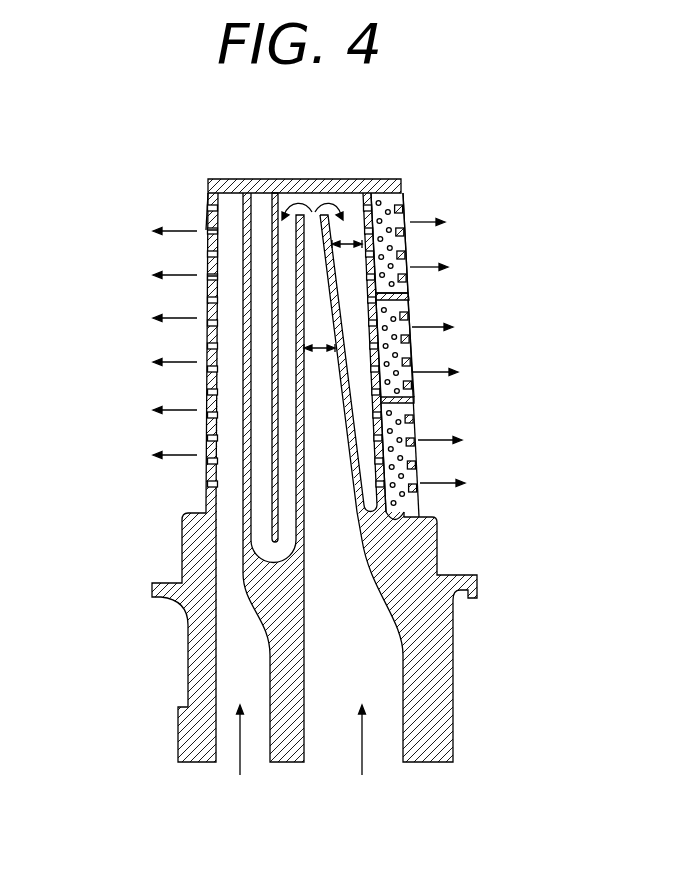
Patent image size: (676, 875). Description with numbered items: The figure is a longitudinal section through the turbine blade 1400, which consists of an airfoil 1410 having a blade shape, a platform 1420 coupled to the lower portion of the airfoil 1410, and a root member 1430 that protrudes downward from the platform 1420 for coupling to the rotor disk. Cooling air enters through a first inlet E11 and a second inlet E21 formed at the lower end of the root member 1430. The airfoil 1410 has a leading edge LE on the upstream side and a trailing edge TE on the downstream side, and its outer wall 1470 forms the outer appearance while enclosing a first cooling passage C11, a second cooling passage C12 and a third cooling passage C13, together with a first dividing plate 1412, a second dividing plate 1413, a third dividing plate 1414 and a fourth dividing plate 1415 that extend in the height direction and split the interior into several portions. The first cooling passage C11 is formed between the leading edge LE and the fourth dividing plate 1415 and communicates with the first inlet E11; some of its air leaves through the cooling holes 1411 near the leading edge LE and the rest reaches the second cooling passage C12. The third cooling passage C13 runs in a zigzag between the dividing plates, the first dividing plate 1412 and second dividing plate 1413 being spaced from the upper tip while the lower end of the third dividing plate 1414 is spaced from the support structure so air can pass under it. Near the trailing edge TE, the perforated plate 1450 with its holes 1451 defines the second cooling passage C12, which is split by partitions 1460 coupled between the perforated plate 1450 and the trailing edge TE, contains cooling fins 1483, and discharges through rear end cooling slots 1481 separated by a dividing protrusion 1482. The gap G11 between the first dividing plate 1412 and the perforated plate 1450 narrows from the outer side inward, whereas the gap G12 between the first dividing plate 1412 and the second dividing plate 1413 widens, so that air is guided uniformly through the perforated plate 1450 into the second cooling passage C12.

The turbine blade 1400 is at (385, 131).
The airfoil 1410 is at (232, 188).
The cooling holes 1411 is at (210, 395).
The first dividing plate 1412 is at (360, 495).
The second dividing plate 1413 is at (297, 465).
The third dividing plate 1414 is at (272, 488).
The fourth dividing plate 1415 is at (243, 430).
The platform 1420 is at (153, 592).
The root member 1430 is at (188, 668).
The perforated plate 1450 is at (375, 250).
The holes 1451 is at (408, 218).
The partitions 1460 is at (405, 290).
The outer wall 1470 is at (212, 262).
The rear end cooling slots 1481 is at (403, 395).
The dividing protrusion 1482 is at (405, 344).
The cooling fins 1483 is at (393, 430).
The first cooling passage C11 is at (229, 360).
The second cooling passage C12 is at (388, 334).
The third cooling passage C13 is at (318, 462).
The first inlet E11 is at (258, 745).
The second cooling air inlet E21 is at (340, 745).
The gap G11 is at (347, 255).
The gap G12 is at (320, 360).
The leading edge LE is at (208, 205).
The trailing edge TE is at (402, 200).